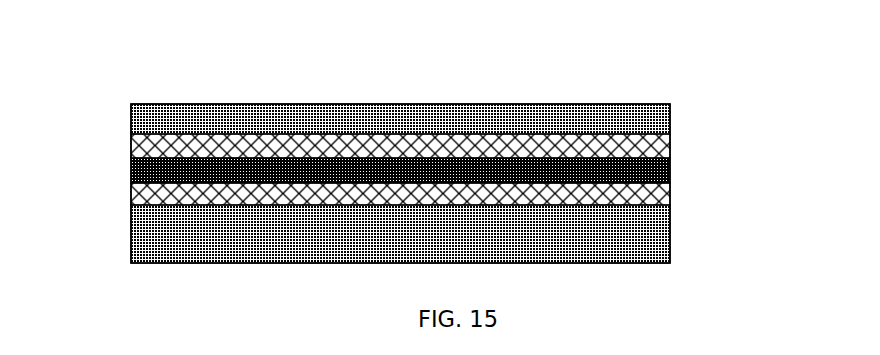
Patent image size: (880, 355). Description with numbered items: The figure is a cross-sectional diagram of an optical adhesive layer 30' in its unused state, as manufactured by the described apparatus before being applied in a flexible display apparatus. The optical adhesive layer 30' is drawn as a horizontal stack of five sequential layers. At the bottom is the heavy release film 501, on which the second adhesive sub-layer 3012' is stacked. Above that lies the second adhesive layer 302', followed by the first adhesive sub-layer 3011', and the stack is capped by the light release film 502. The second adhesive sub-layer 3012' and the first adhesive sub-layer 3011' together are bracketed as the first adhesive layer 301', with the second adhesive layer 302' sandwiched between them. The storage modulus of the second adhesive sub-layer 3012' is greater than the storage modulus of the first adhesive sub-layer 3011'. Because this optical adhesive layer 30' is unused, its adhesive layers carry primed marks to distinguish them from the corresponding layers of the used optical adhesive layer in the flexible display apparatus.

The optical adhesive layer 30' is at (451, 147).
The second adhesive layer 302' is at (352, 172).
The first adhesive layer 301' is at (499, 168).
The second adhesive sub-layer 3012' is at (464, 146).
The first adhesive sub-layer 3011' is at (464, 194).
The light release film 502 is at (670, 120).
The heavy release film 501 is at (670, 250).